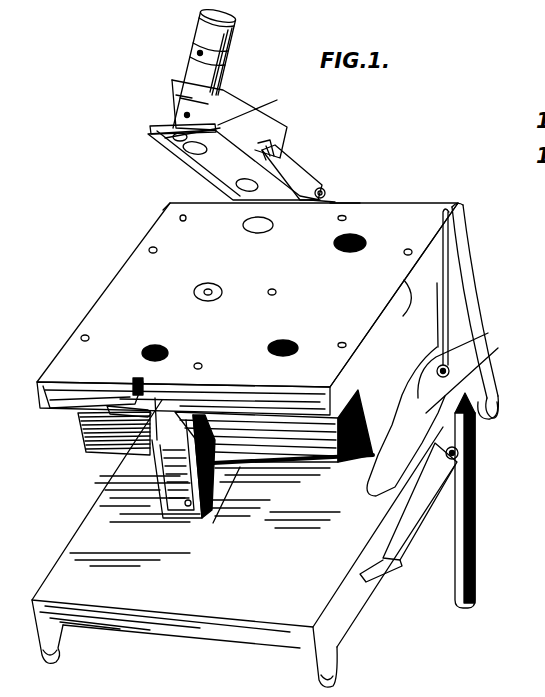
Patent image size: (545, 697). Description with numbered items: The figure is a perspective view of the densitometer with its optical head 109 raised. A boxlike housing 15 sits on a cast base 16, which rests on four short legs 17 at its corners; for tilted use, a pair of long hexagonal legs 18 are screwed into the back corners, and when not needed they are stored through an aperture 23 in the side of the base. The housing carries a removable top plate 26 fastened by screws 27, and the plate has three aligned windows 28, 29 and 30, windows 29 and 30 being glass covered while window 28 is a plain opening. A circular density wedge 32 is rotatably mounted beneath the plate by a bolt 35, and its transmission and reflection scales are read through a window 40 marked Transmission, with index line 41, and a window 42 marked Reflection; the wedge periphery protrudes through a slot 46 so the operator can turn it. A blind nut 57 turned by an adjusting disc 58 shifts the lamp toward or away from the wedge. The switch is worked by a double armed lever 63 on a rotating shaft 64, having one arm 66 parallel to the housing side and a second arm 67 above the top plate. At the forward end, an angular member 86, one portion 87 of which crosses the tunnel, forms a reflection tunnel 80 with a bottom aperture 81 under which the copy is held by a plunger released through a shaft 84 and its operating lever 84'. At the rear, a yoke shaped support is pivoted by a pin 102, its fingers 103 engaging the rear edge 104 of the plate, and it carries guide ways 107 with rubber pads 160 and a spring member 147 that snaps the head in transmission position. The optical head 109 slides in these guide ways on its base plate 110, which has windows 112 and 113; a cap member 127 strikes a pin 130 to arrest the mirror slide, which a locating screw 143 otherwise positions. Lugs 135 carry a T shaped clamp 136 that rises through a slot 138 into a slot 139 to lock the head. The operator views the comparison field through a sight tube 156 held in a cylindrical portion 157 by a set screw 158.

The boxlike housing 15 is at (468, 308).
The base 16 is at (67, 553).
The legs 17 is at (43, 657).
The long hexagonal legs 18 is at (477, 563).
The aperture 23 is at (470, 400).
The top plate 26 is at (398, 205).
The screws 27 is at (150, 250).
The window 28 is at (160, 329).
The window 29 is at (213, 272).
The window 30 is at (243, 226).
The circular density wedge 32 is at (375, 326).
The bolts 35 is at (230, 317).
The window 40 is at (357, 252).
The index line 41 is at (345, 250).
The window 42 is at (276, 356).
The slot 46 is at (404, 288).
The blind nut member 57 is at (168, 206).
The adjusting disc 58 is at (183, 217).
The double armed lever 63 is at (483, 329).
The rotating shaft 64 is at (478, 352).
The arm 66 is at (368, 492).
The second arm 67 is at (453, 238).
The reflection tunnel 80 is at (120, 470).
The aperture 81 is at (187, 506).
The rotatable shaft 84 is at (447, 501).
The operating lever 84' is at (391, 586).
The angular member 86 is at (246, 467).
The portion 87 is at (122, 460).
The pin 102 is at (323, 188).
The fingers 103 is at (327, 196).
The rear edge 104 is at (342, 203).
The guide ways 107 is at (166, 128).
The optical head 109 is at (247, 95).
The base plate 110 is at (178, 142).
The window 112 is at (180, 152).
The window 113 is at (222, 185).
The cap member 127 is at (268, 152).
The pin 130 is at (218, 125).
The lugs 135 is at (50, 408).
The T shaped clamp 136 is at (80, 432).
The slot 138 is at (134, 382).
The slot 139 is at (185, 114).
The locating screw 143 is at (187, 114).
The spring member 147 is at (544, 140).
The sight tube 156 is at (200, 30).
The cylindrical portion 157 is at (236, 58).
The set screw 158 is at (197, 54).
The rubber pads 160 is at (178, 140).